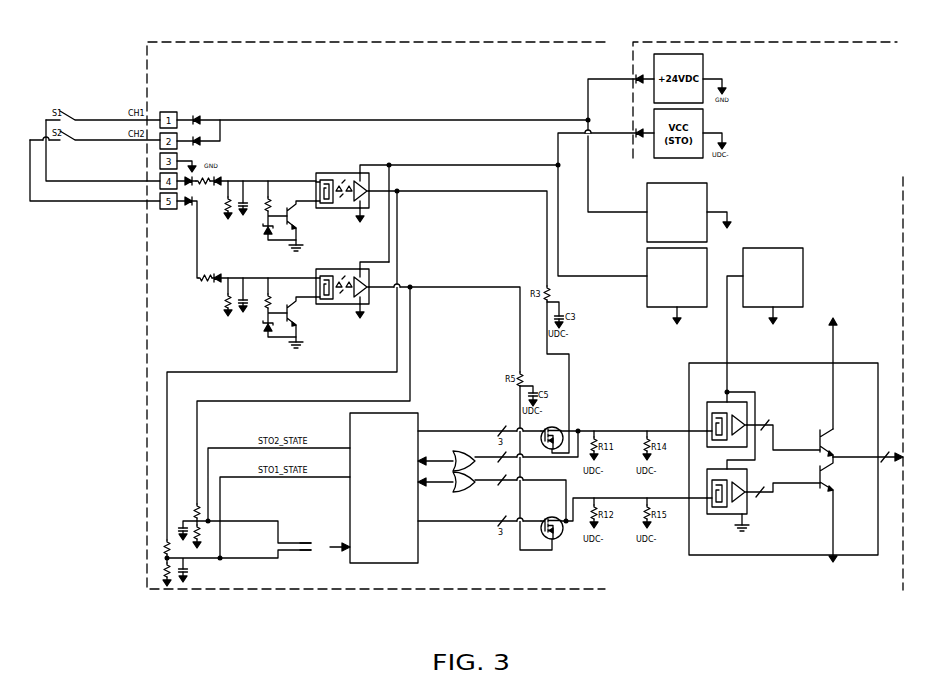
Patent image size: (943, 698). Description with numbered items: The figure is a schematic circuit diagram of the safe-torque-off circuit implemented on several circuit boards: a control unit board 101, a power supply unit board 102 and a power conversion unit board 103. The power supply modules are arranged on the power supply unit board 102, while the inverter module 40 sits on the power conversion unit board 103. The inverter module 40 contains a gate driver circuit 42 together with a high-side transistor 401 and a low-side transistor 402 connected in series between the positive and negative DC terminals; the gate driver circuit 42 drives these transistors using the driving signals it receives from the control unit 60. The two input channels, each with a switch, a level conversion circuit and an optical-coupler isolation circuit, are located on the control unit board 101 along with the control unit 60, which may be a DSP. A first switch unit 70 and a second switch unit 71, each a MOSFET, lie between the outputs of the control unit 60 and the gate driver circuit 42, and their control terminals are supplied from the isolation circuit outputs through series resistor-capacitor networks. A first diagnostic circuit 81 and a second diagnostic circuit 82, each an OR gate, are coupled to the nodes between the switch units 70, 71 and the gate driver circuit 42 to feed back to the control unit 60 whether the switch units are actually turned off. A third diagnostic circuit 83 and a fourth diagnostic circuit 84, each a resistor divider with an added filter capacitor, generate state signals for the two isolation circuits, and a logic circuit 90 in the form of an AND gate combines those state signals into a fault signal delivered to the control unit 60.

The control unit board 101 is at (454, 42).
The power supply unit board 102 is at (716, 42).
The power conversion unit board 103 is at (723, 591).
The inverter module 40 is at (796, 427).
The gate driver circuit 42 is at (710, 402).
The high-side transistor 401 is at (826, 439).
The low-side transistor 402 is at (828, 473).
The control unit 60 is at (384, 564).
The first switch unit 70 is at (544, 430).
The second switch unit 71 is at (547, 541).
The first diagnostic circuit 81 is at (471, 451).
The second diagnostic circuit 82 is at (468, 492).
The third diagnostic circuit 83 is at (162, 571).
The fourth diagnostic circuit 84 is at (192, 506).
The logic circuit 90 is at (318, 564).